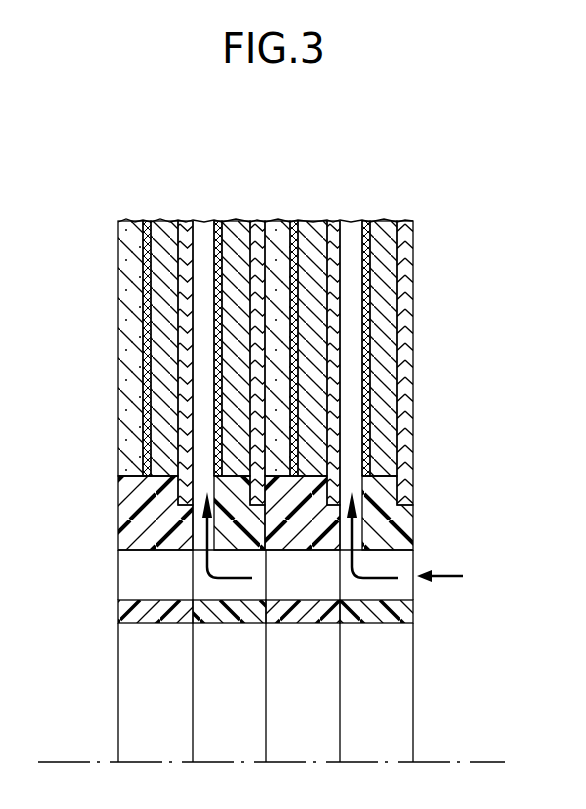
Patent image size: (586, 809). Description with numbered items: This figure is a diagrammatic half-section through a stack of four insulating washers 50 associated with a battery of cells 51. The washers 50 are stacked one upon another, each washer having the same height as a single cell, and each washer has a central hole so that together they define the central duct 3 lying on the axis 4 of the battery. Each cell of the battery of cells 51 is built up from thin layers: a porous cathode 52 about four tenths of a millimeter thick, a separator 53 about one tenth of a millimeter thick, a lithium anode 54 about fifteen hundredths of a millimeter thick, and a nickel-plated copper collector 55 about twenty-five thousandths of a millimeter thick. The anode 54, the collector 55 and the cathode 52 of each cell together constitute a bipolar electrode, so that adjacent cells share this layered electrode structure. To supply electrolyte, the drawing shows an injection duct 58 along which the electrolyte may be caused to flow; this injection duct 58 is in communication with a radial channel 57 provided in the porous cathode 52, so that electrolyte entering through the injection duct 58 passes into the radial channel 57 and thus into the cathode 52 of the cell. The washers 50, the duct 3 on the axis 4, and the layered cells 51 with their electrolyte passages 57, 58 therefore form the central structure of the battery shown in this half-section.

The duct 3 is at (318, 707).
The axis 4 is at (497, 761).
The insulating washers 50 is at (395, 537).
The cells 51 is at (423, 453).
The porous cathode 52 is at (357, 221).
The separator 53 is at (368, 229).
The lithium anode 54 is at (385, 275).
The nickel-plated copper collector 55 is at (332, 221).
The radial channel 57 is at (353, 415).
The injection duct 58 is at (372, 554).